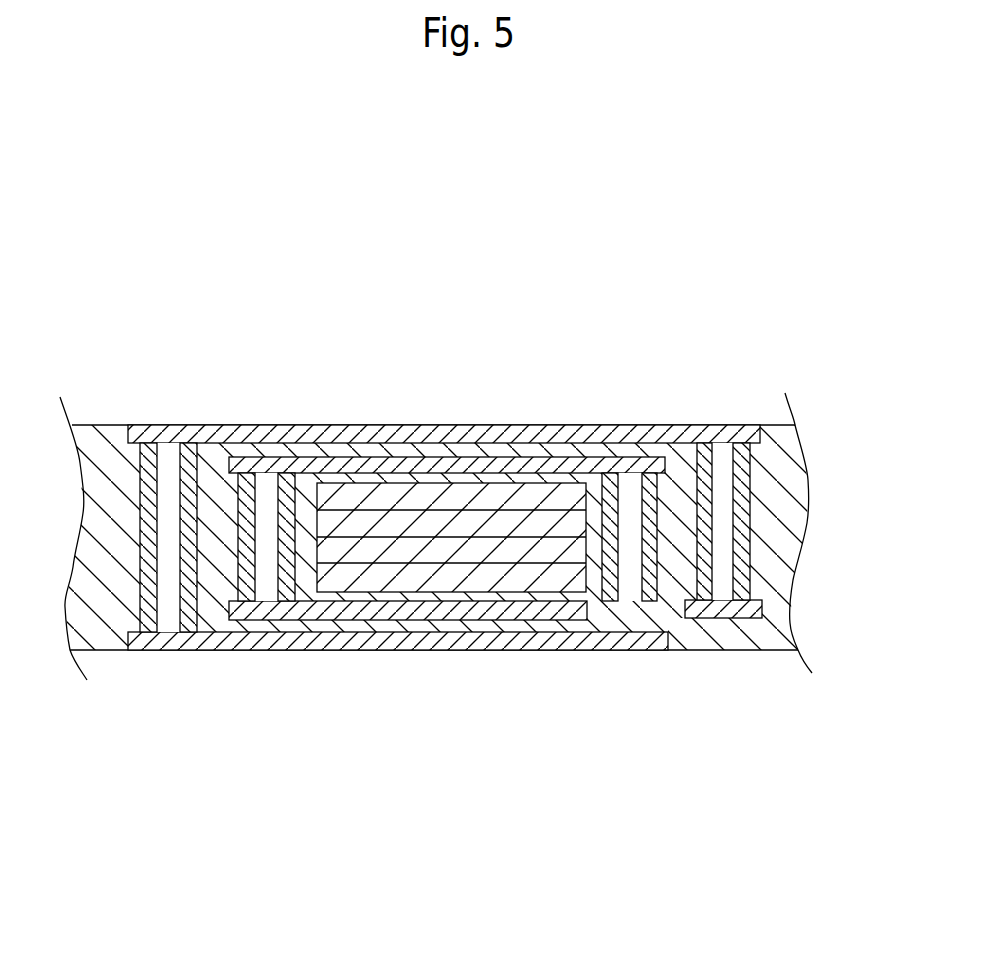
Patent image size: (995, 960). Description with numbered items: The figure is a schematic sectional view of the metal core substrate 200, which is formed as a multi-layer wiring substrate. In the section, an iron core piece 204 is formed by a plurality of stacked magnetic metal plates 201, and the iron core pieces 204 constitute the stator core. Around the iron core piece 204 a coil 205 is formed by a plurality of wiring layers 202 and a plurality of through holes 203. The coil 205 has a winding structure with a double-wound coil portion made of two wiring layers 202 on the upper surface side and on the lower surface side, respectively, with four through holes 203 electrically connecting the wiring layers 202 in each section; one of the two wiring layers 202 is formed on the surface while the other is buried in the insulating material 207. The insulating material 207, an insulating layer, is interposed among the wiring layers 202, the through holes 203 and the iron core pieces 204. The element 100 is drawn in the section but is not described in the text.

The electronic component (multilayer capacitor) 100 is at (450, 420).
The metal core substrate 200 is at (587, 290).
The magnetic metal plate 201 is at (508, 500).
The wiring layer 202 is at (226, 432).
The through hole 203 is at (150, 585).
The iron core piece 204 is at (743, 362).
The coil 205 is at (695, 767).
The insulating material 207 is at (777, 490).